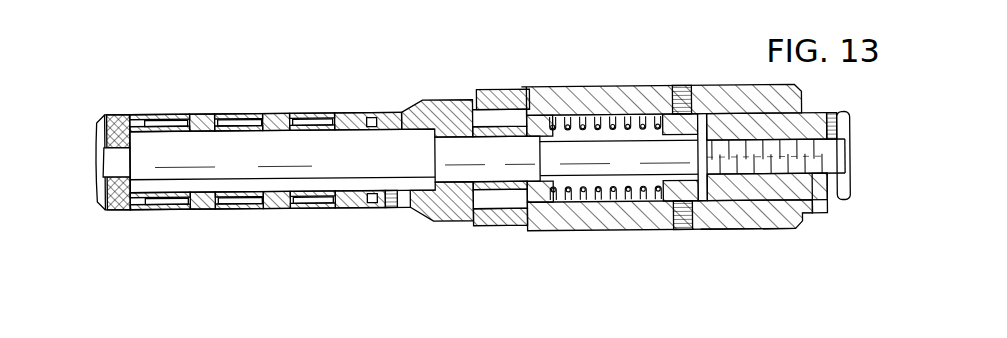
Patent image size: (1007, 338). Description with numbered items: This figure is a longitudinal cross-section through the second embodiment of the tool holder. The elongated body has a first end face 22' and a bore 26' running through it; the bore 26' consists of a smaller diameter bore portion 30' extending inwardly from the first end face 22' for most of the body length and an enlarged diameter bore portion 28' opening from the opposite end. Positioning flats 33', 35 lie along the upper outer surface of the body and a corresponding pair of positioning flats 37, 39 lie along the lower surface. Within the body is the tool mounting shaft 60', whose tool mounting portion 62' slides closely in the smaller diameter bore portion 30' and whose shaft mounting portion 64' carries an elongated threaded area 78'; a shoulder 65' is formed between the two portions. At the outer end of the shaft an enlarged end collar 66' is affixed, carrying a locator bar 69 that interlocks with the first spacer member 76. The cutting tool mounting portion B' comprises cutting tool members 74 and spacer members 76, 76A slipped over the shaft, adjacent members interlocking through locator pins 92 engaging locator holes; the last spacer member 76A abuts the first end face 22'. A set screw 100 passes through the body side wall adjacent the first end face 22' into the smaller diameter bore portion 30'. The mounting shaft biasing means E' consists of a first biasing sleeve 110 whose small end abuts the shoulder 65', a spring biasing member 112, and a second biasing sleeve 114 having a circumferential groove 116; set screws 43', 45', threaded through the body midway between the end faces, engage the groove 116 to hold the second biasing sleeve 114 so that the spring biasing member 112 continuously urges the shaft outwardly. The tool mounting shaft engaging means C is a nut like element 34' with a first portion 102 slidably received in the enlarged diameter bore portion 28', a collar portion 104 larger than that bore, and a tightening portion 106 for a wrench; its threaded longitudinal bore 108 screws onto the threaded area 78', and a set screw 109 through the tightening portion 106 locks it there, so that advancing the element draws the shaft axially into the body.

The spacer member 76 is at (137, 115).
The end collar 66' is at (103, 204).
The tool mounting shaft 60' is at (282, 127).
The locator bar 69 is at (133, 156).
The tool mounting portion 62' is at (283, 220).
The cutting tool member 74 is at (167, 114).
The locator pin 92 is at (296, 115).
The spacer member 76A is at (205, 114).
The first end face 22' is at (368, 131).
The set screw 100 is at (390, 212).
The smaller diameter bore portion 30' is at (464, 98).
The shoulder 65' is at (469, 232).
The bore 26' is at (489, 80).
The enlarged diameter bore portion 28' is at (503, 74).
The first biasing sleeve 110 is at (493, 212).
The positioning flat 37 is at (517, 230).
The positioning flat 33' is at (669, 130).
The positioning flat 35 is at (522, 90).
The positioning flat 39 is at (740, 235).
The shaft mounting portion 64' is at (639, 113).
The mounting shaft biasing means E' is at (607, 82).
The spring biasing member 112 is at (575, 206).
The second biasing sleeve 114 is at (667, 188).
The groove 116 is at (703, 207).
The set screw 43' is at (692, 74).
The set screw 45' is at (683, 242).
The first portion 102 is at (747, 120).
The threaded longitudinal bore 108 is at (813, 144).
The threaded area 78' is at (767, 221).
The collar portion 104 is at (817, 119).
The set screw 109 is at (838, 119).
The nut like element 34' is at (876, 148).
The tightening portion 106 is at (840, 200).
The tool mounting shaft engaging means C is at (842, 227).
The cutting tool mounting portion B' is at (183, 249).